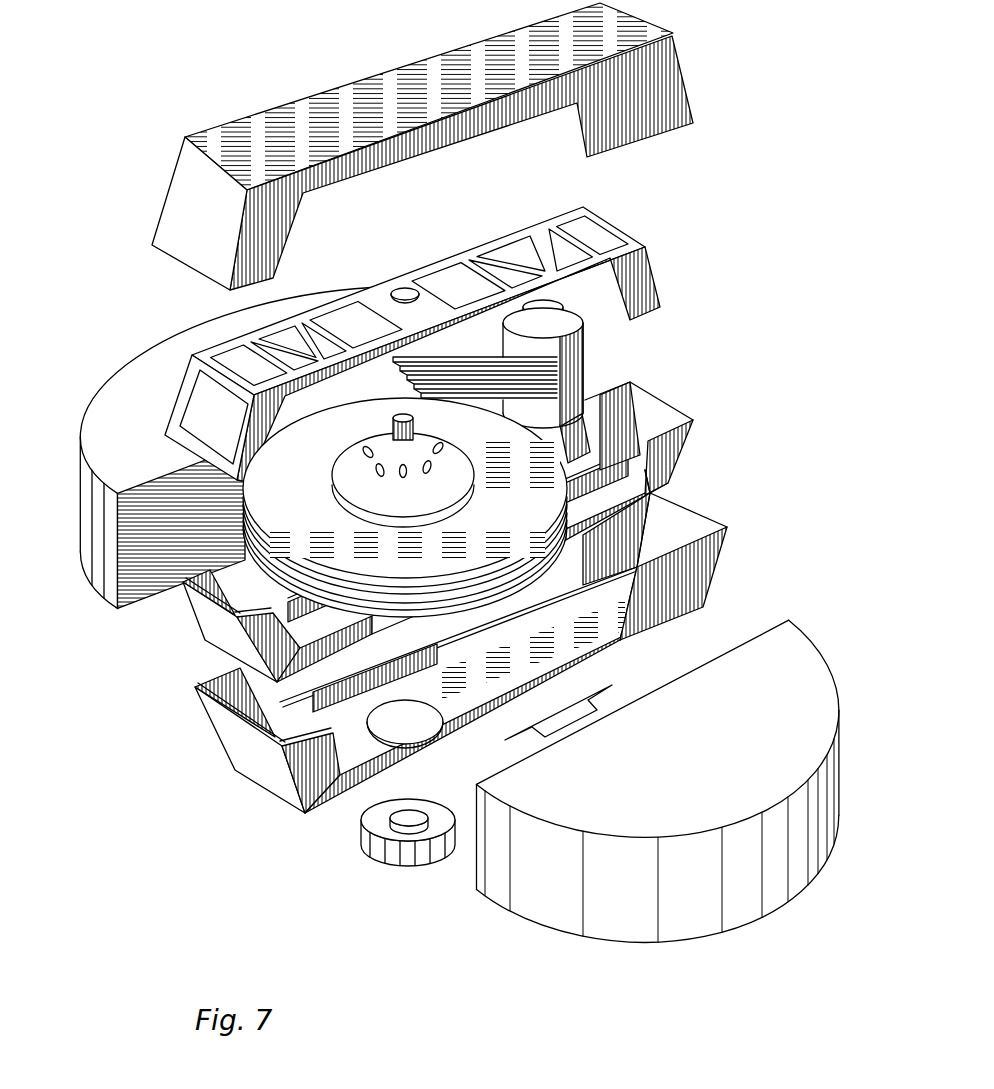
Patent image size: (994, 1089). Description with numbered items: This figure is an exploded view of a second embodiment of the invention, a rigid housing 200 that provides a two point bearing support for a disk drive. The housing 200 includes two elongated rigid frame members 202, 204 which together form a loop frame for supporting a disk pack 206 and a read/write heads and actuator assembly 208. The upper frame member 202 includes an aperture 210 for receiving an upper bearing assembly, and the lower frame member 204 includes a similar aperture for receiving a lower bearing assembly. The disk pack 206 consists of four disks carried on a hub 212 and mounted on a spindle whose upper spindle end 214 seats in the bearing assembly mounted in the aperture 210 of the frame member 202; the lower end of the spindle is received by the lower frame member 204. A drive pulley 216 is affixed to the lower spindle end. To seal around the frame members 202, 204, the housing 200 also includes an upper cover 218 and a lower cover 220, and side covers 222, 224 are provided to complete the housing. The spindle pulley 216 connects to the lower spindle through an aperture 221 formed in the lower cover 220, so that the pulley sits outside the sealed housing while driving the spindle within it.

The housing 200 is at (89, 183).
The frame member 202 is at (431, 342).
The frame member 204 is at (478, 532).
The disk pack 206 is at (566, 473).
The read/write heads and actuator assembly 208 is at (583, 358).
The aperture 210 is at (403, 288).
The hub 212 is at (405, 507).
The upper spindle end 214 is at (385, 431).
The drive pulley 216 is at (361, 833).
The upper cover 218 is at (688, 73).
The lower cover 220 is at (461, 649).
The aperture 221 is at (437, 695).
The side cover 222 is at (86, 572).
The side cover 224 is at (527, 923).